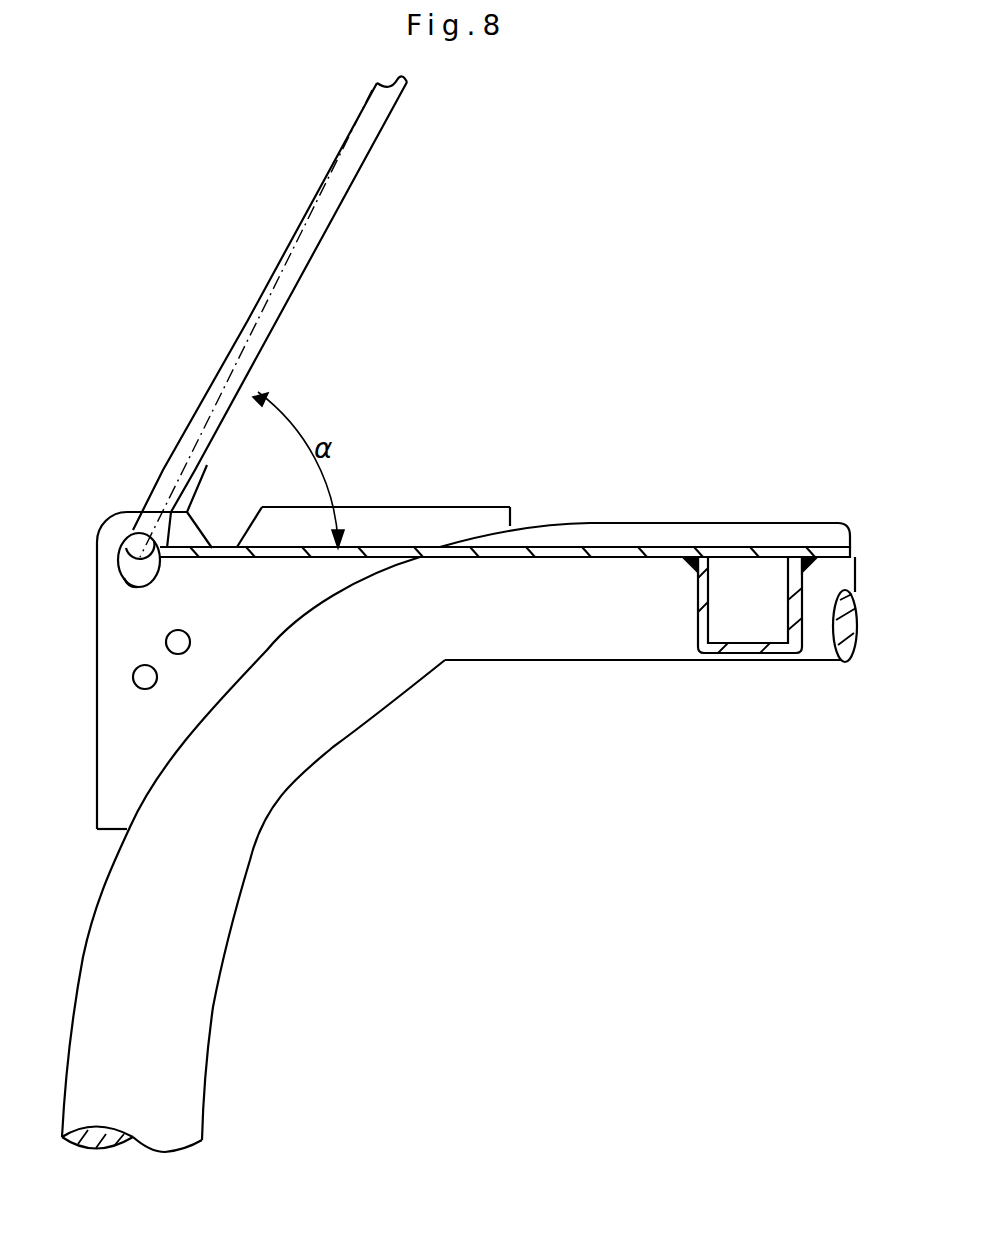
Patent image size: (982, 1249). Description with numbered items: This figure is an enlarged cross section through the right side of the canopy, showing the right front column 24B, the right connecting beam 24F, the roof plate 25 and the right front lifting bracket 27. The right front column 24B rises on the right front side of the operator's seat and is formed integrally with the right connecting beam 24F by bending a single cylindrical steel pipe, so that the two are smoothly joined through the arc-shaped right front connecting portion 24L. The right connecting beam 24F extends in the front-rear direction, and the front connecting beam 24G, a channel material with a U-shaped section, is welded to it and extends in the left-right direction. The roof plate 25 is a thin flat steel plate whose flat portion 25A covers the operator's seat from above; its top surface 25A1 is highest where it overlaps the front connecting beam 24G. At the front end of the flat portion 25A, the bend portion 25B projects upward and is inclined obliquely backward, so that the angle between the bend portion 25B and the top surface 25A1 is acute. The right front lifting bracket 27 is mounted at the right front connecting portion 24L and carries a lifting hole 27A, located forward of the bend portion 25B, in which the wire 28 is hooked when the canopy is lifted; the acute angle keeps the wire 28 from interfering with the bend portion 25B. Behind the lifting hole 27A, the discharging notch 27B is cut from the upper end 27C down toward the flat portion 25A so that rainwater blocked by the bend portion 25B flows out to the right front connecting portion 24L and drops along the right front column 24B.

The wire 28 is at (347, 149).
The bend portion 25B is at (157, 516).
The lifting hole 27A is at (118, 576).
The discharging notch 27B is at (246, 523).
The right front lifting bracket 27 is at (382, 518).
The upper end 27C is at (438, 506).
The top surface 25A1 is at (546, 550).
The flat portion 25A is at (631, 552).
The roof plate 25 is at (823, 551).
The front connecting beam 24G is at (718, 654).
The right connecting beam 24F is at (820, 655).
The right front connecting portion 24L is at (337, 743).
The right front column 24B is at (190, 1136).